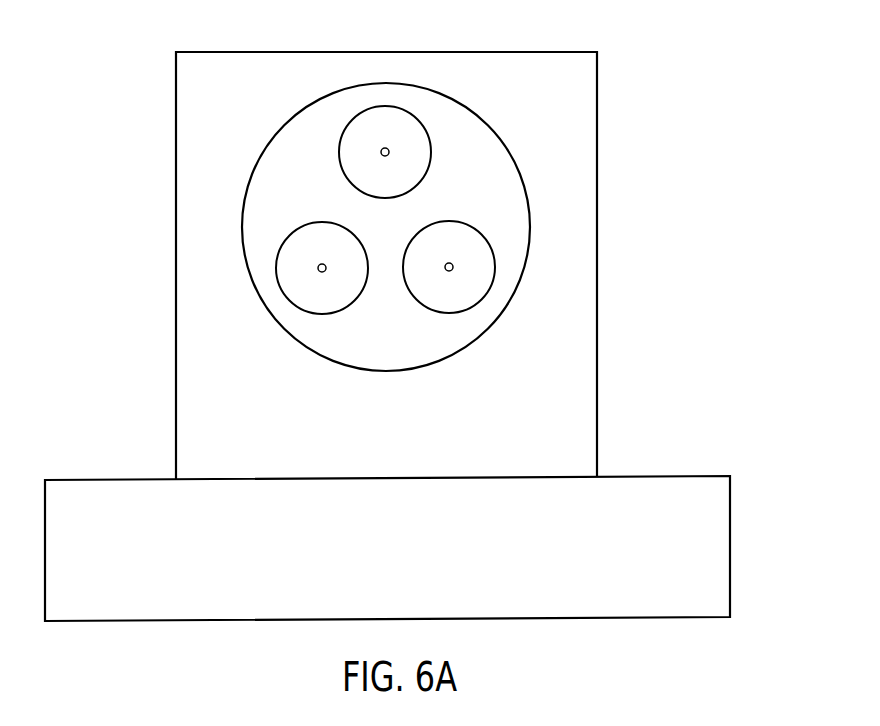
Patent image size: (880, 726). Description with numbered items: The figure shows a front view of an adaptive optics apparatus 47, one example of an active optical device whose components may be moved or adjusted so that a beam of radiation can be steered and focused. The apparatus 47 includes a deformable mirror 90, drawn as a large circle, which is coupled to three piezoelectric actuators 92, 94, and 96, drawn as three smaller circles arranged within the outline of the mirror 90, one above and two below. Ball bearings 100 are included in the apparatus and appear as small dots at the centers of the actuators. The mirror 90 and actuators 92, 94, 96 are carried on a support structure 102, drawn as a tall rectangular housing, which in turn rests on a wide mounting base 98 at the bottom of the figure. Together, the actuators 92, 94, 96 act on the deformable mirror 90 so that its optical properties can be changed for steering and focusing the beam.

The adaptive optics apparatus 47 is at (688, 79).
The deformable mirror 90 is at (513, 157).
The piezoelectric actuator 92 is at (339, 157).
The piezoelectric actuator 94 is at (418, 235).
The piezoelectric actuator 96 is at (357, 303).
The mounting base 98 is at (730, 540).
The ball bearings 100 is at (451, 262).
The support structure 102 is at (597, 180).